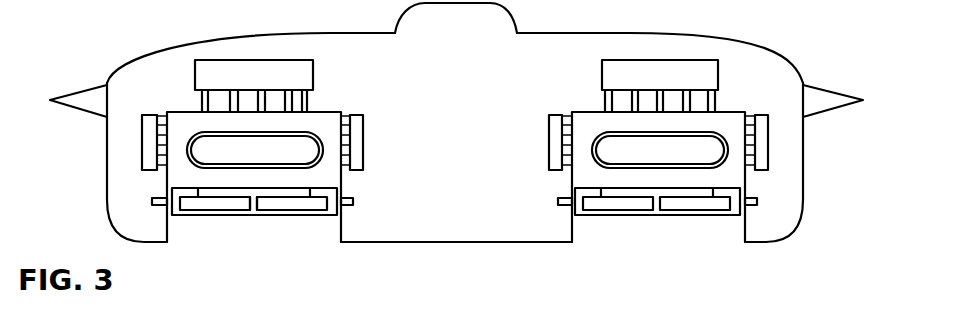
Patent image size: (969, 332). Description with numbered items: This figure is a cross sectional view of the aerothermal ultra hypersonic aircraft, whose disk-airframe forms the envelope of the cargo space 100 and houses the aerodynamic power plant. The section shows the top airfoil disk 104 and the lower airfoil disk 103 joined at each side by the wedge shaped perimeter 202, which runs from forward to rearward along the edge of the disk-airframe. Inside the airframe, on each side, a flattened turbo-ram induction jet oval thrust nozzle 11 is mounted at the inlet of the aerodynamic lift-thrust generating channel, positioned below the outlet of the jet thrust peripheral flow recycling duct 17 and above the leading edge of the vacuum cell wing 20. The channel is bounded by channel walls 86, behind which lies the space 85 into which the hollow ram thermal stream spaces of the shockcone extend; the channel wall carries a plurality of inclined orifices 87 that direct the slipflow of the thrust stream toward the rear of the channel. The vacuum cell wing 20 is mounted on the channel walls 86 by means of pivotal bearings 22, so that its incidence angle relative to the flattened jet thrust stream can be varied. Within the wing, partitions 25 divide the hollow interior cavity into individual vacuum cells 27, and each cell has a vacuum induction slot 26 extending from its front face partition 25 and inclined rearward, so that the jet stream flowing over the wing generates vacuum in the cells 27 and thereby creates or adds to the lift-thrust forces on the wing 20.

The cargo space 100 is at (470, 116).
The top airfoil disk 104 is at (333, 31).
The lower airfoil disk 103 is at (428, 236).
The wedge shaped perimeter 202 is at (57, 97).
The jet thrust peripheral flow recycling duct 17 is at (456, 86).
The turbo-ram induction jet oval thrust nozzle 11 is at (457, 150).
The space behind the channel walls 85 is at (355, 136).
The channel walls 86 is at (162, 182).
The inclined orifices 87 is at (343, 118).
The vacuum cell wing 20 is at (703, 217).
The pivotal bearings 22 is at (157, 207).
The partitions 25 is at (255, 202).
The vacuum induction slot 26 is at (292, 193).
The vacuum cell 27 is at (217, 202).